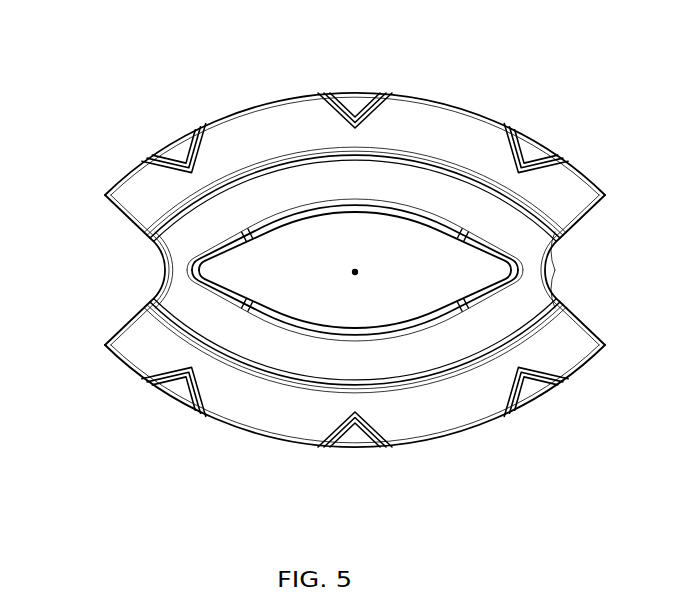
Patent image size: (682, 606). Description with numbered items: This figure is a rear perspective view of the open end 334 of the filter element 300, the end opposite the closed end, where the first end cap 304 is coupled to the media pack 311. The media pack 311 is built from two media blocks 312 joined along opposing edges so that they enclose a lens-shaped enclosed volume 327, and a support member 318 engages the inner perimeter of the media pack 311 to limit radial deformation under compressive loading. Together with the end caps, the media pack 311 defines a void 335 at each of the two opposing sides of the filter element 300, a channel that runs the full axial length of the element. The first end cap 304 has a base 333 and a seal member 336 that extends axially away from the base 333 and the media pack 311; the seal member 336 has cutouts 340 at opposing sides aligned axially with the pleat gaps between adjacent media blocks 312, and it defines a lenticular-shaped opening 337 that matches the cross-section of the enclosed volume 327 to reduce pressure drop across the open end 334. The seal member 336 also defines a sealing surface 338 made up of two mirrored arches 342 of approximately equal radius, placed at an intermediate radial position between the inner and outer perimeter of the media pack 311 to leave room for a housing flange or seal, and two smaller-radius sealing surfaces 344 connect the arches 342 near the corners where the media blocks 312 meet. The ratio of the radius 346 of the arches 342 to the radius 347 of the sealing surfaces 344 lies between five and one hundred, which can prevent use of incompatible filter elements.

The filter element 300 is at (116, 93).
The first end cap 304 is at (135, 356).
The media pack 311 is at (233, 236).
The media blocks 312 is at (258, 225).
The support member 318 is at (468, 234).
The enclosed volume 327 is at (290, 290).
The base 333 is at (443, 137).
The open end 334 is at (84, 282).
The void 335 is at (145, 279).
The seal member 336 is at (466, 357).
The lenticular-shaped opening 337 is at (373, 237).
The sealing surface 338 is at (350, 347).
The cutouts 340 is at (564, 292).
The arches 342 is at (311, 207).
The sealing surfaces 344 is at (556, 248).
The radius of the arches 346 is at (356, 257).
The radius of the sealing surfaces 347 is at (189, 277).